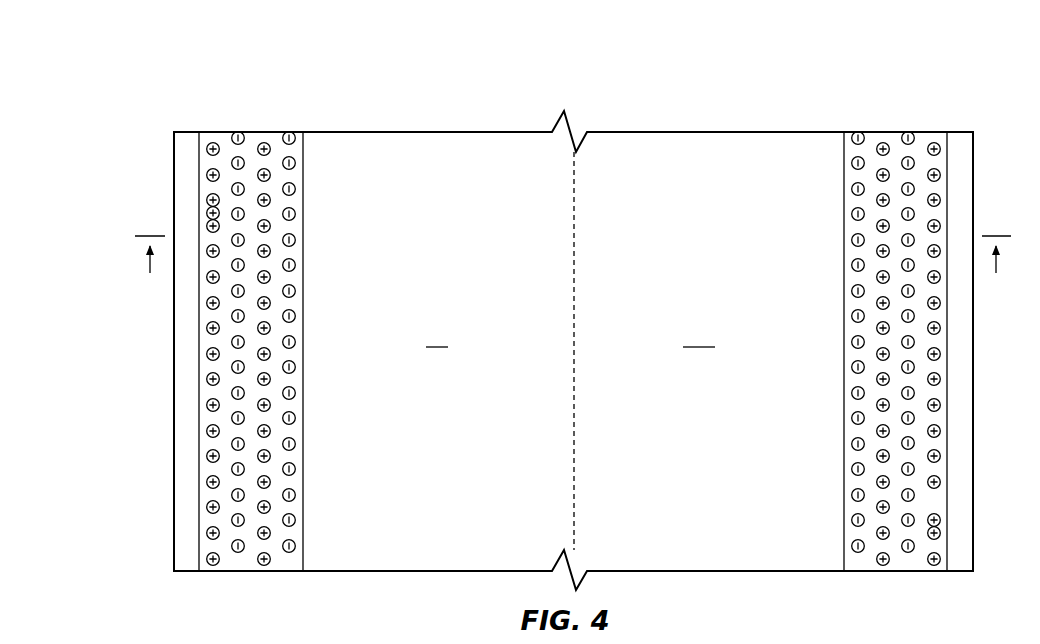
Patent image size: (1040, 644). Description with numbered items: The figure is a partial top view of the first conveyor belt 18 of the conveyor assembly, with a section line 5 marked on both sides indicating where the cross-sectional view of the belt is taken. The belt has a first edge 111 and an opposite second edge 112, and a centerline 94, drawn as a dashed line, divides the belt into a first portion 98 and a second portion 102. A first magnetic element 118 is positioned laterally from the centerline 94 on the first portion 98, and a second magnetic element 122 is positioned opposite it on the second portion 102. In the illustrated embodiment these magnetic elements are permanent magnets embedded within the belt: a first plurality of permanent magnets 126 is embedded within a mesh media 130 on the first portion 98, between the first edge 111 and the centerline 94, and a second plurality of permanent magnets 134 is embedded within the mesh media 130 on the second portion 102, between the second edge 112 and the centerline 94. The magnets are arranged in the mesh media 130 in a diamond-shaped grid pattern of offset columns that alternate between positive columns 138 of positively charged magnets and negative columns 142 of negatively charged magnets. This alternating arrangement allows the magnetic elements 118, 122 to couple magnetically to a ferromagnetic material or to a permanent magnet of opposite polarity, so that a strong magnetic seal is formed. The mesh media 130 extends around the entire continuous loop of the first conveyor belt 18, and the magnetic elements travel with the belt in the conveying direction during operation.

The first conveyor belt 18 is at (474, 106).
The section line for FIG. 5 is at (573, 268).
The centerline 94 is at (571, 241).
The first portion 98 is at (437, 336).
The second portion 102 is at (699, 336).
The first edge 111 is at (174, 178).
The second edge 112 is at (973, 192).
The first magnetic element 118 is at (210, 566).
The second magnetic element 122 is at (931, 142).
The first plurality of permanent magnets 126 is at (222, 396).
The mesh media 130 is at (206, 213).
The second plurality of permanent magnets 134 is at (917, 443).
The positive columns 138 is at (208, 128).
The negative columns 142 is at (238, 128).